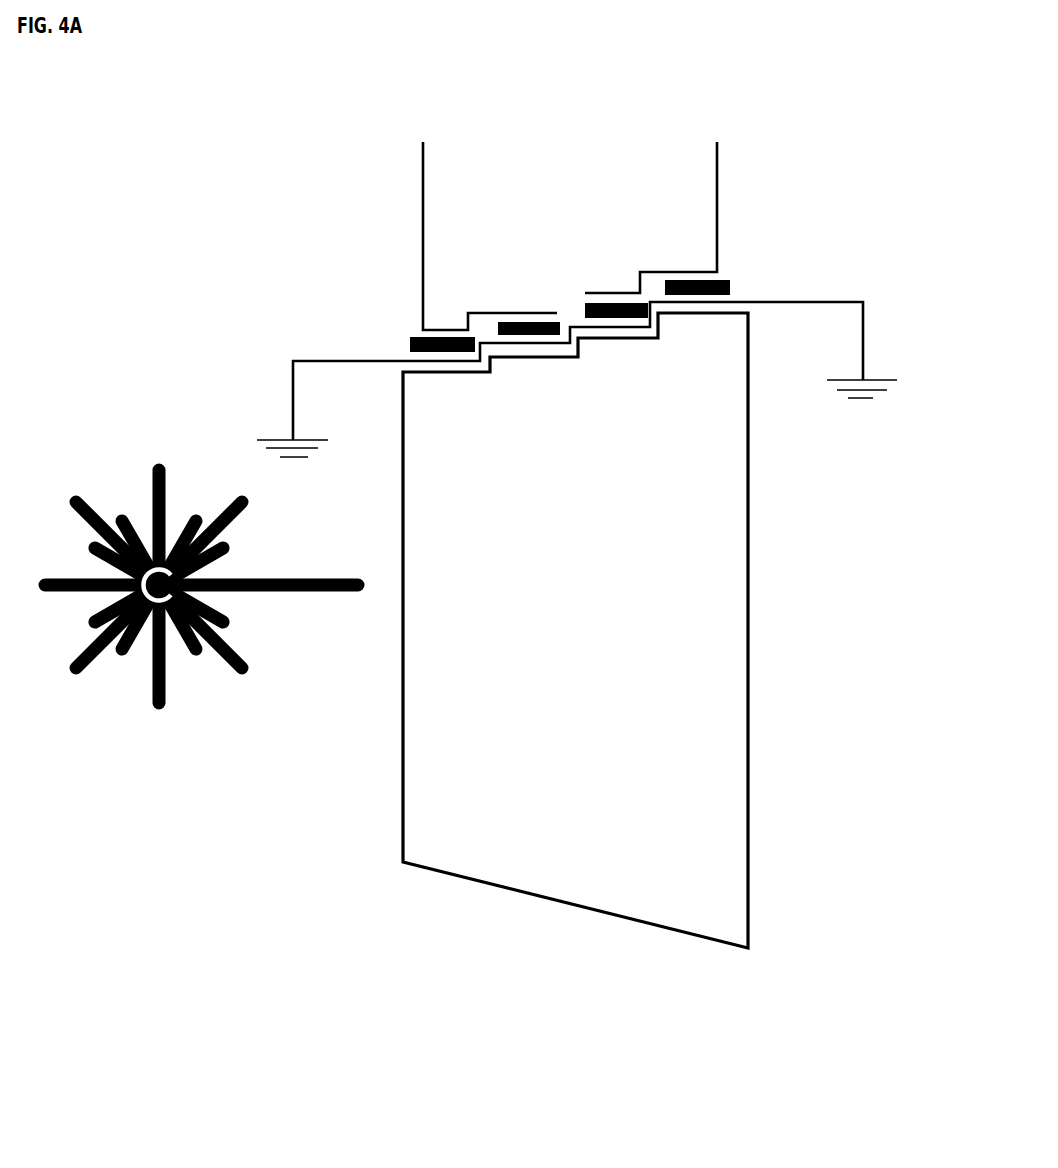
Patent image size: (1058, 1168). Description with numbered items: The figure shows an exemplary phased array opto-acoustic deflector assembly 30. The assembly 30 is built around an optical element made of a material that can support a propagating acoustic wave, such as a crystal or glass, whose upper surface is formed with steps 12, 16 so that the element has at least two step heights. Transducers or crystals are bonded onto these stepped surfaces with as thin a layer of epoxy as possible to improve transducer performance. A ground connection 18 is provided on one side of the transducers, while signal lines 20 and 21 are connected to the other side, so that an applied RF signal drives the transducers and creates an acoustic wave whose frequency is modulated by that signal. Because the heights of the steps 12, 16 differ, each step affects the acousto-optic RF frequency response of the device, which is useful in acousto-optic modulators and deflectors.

The step 12 is at (516, 390).
The step 16 is at (636, 361).
The ground connection 18 is at (595, 368).
The signal line 20 is at (475, 218).
The signal line 21 is at (661, 189).
The assembly 30 is at (575, 654).